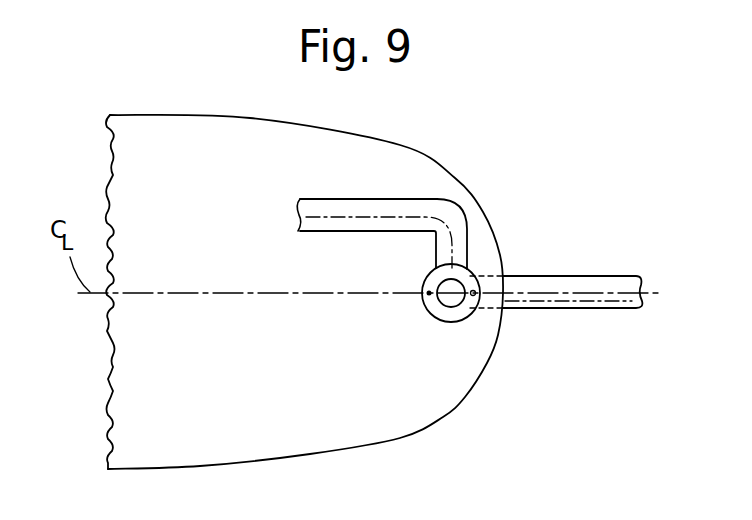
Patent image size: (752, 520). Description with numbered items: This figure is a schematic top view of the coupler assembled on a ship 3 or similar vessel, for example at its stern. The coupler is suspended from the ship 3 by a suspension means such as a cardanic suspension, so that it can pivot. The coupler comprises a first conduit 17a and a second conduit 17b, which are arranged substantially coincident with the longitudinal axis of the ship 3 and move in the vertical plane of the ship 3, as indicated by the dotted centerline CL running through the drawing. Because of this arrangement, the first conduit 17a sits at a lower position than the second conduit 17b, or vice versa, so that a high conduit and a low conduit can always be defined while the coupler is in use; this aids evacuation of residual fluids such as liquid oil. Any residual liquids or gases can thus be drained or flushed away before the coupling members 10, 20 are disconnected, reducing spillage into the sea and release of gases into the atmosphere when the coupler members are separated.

The ship 3 is at (262, 388).
The first conduit 17a is at (428, 298).
The second conduit 17b is at (474, 290).
The coupling member 10 is at (506, 332).
The coupling member 20 is at (462, 322).